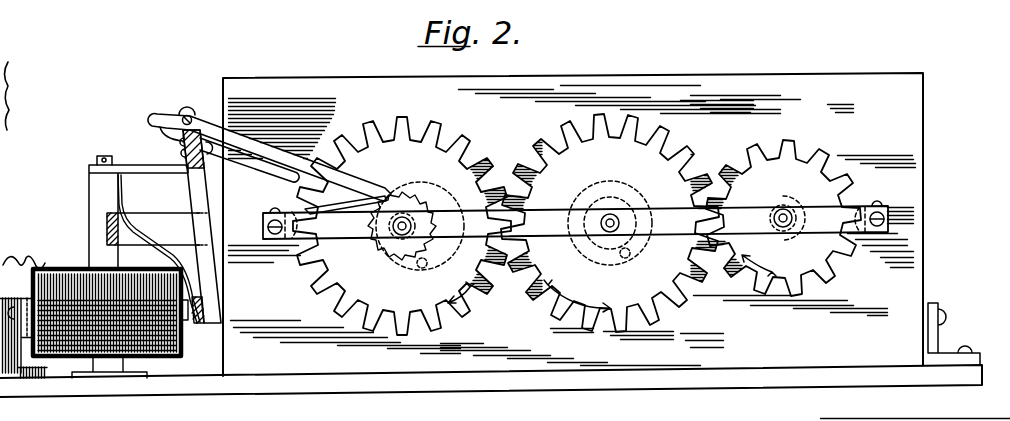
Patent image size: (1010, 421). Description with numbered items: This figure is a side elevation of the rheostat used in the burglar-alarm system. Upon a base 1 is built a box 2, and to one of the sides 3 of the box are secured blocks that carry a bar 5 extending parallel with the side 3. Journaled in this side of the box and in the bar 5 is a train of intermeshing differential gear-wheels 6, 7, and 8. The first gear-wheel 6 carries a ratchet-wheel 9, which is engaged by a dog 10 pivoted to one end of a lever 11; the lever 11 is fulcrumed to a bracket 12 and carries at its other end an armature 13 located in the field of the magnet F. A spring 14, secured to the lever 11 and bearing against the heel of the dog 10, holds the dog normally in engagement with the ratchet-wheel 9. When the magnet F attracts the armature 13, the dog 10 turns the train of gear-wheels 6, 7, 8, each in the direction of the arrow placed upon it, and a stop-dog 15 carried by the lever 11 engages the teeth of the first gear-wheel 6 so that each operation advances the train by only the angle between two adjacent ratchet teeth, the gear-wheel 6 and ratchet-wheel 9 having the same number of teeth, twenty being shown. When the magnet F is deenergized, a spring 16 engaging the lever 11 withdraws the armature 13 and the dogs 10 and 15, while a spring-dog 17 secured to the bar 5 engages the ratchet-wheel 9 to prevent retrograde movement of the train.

The base 1 is at (491, 381).
The box 2 is at (574, 78).
The side of the box 3 is at (606, 237).
The bar 5 is at (575, 220).
The first gear-wheel 6 is at (402, 226).
The gear-wheel 7 is at (610, 223).
The gear-wheel 8 is at (783, 218).
The ratchet-wheel 9 is at (418, 197).
The dog 10 is at (282, 152).
The lever 11 is at (193, 190).
The bracket 12 is at (148, 213).
The armature 13 is at (200, 327).
The spring 14 is at (166, 131).
The stop-dog 15 is at (264, 175).
The spring 16 is at (147, 236).
The spring-dog 17 is at (345, 197).
The magnet F is at (80, 270).